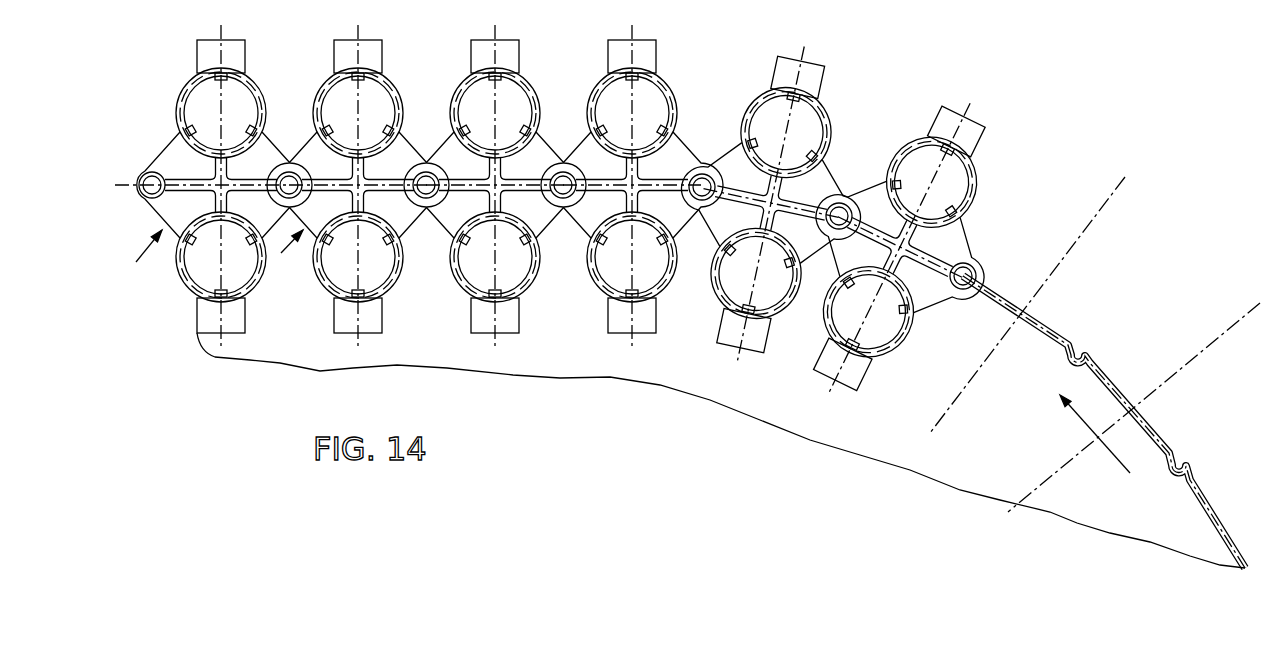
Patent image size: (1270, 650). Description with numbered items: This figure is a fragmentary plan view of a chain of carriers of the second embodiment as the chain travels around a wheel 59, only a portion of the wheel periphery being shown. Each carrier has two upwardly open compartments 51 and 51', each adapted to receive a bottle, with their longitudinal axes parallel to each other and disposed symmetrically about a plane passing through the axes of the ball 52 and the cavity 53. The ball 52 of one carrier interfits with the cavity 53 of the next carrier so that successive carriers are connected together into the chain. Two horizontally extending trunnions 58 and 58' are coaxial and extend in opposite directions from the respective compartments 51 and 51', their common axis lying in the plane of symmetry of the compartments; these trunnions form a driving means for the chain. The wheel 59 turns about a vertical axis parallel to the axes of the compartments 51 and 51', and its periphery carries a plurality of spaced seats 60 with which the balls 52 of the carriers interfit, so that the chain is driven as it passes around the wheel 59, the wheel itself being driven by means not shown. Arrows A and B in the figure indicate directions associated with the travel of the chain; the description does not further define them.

The compartment 51 is at (197, 112).
The compartment 51' is at (194, 260).
The ball 52 is at (126, 199).
The cavity 53 is at (291, 154).
The trunnion 58 is at (241, 48).
The trunnion 58' is at (197, 329).
The wheel 59 is at (1079, 284).
The seat 60 is at (1088, 368).
The direction A is at (142, 253).
The direction B is at (289, 252).